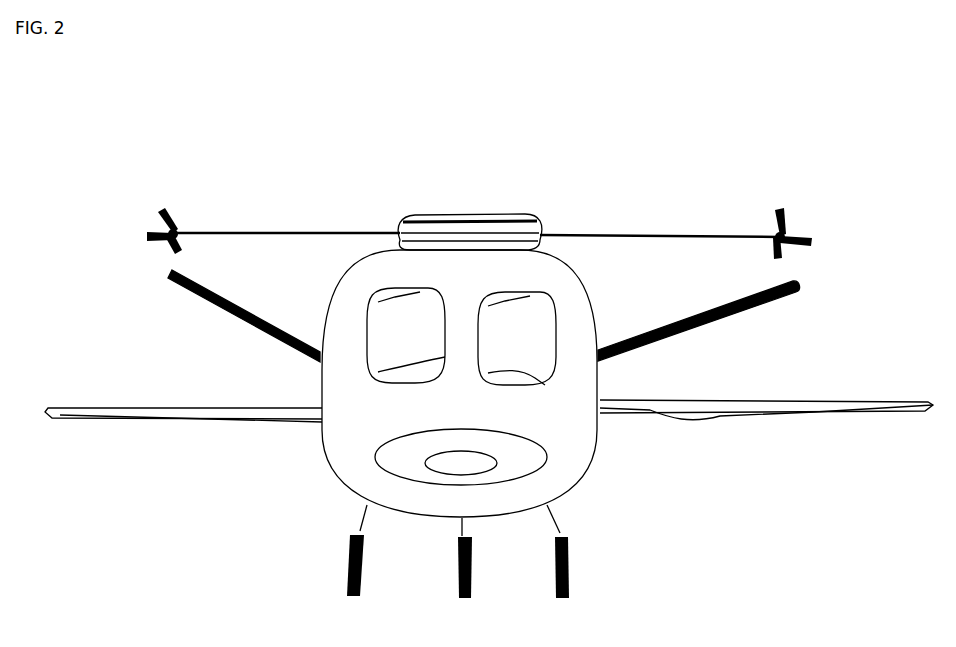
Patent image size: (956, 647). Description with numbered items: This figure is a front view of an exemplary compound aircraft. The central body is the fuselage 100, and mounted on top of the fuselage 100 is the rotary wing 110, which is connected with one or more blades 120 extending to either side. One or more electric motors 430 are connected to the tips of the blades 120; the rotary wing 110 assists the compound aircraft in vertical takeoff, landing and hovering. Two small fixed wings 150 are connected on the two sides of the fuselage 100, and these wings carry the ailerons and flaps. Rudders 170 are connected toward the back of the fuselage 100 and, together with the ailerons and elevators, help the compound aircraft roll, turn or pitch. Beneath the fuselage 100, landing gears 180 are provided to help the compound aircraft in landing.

The fuselage 100 is at (333, 465).
The rotary wing 110 is at (477, 207).
The blades 120 is at (288, 230).
The small fixed wings 150 is at (152, 407).
The rudders 170 is at (803, 289).
The landing gears 180 is at (574, 559).
The electric motors 430 is at (181, 228).